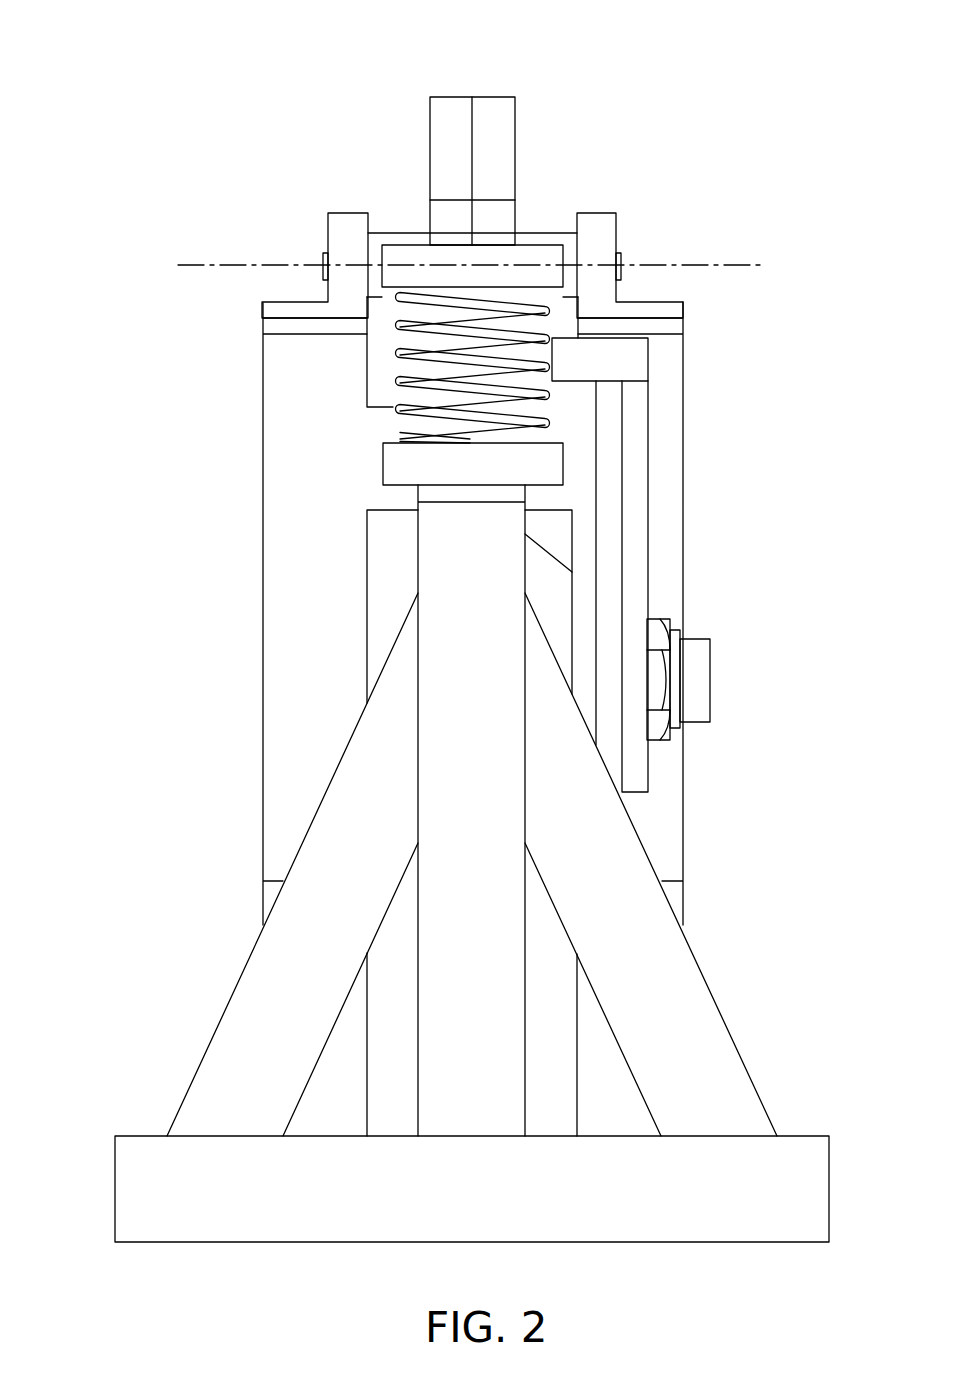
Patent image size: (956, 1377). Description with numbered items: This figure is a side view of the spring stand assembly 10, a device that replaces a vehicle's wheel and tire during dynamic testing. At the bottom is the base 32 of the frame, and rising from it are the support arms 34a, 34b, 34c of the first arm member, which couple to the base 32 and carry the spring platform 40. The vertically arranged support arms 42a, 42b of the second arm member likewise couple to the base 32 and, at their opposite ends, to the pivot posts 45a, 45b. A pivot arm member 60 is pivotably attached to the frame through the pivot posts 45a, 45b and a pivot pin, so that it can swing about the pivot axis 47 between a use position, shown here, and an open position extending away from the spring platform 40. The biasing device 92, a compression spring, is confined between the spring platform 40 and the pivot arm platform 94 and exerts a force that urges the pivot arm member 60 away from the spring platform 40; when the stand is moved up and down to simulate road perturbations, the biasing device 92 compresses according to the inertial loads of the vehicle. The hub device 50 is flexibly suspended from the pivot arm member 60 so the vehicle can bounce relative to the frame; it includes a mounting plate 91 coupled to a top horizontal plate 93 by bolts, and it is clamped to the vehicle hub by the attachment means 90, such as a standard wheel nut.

The spring stand assembly 10 is at (239, 140).
The base 32 is at (115, 1196).
The support arm 34a is at (230, 1025).
The support arm 34b is at (464, 1128).
The support arm 34c is at (720, 1025).
The spring platform 40 is at (390, 468).
The support arm 42a is at (683, 824).
The support arm 42b is at (268, 655).
The pivot post 45a is at (600, 213).
The pivot post 45b is at (344, 213).
The pivot axis 47 is at (706, 267).
The hub device 50 is at (652, 458).
The pivot arm member 60 is at (516, 124).
The attachment means 90 is at (710, 678).
The mounting plate 91 is at (610, 514).
The biasing device 92 is at (393, 388).
The top horizontal plate 93 is at (642, 361).
The pivot arm platform 94 is at (528, 245).